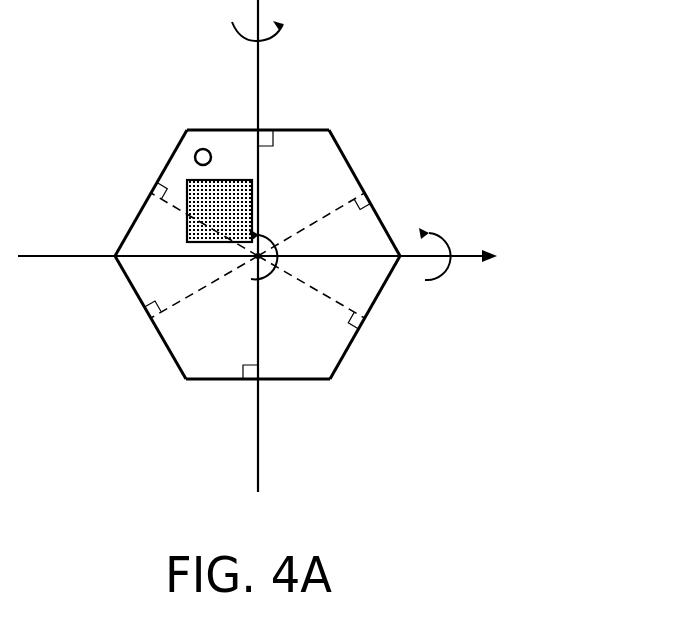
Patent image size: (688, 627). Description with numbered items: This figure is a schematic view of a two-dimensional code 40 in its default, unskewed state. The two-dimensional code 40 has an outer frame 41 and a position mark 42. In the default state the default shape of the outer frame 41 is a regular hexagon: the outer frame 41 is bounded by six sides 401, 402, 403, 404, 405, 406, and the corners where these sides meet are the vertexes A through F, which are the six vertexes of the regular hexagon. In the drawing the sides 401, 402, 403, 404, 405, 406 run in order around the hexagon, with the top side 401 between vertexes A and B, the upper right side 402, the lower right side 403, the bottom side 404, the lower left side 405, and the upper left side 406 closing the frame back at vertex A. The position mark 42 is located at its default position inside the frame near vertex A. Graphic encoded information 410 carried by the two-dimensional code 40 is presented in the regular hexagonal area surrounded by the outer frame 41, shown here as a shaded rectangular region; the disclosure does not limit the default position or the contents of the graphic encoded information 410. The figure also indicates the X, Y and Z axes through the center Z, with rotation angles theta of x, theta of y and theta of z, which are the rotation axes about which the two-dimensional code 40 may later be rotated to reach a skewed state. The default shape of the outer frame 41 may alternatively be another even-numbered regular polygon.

The two-dimensional code 40 is at (527, 497).
The outer frame 41 is at (394, 191).
The position mark 42 is at (204, 146).
The side 401 is at (292, 130).
The side 402 is at (350, 165).
The side 403 is at (348, 352).
The side 404 is at (290, 380).
The side 405 is at (157, 337).
The side 406 is at (168, 162).
The graphic encoded information 410 is at (229, 185).